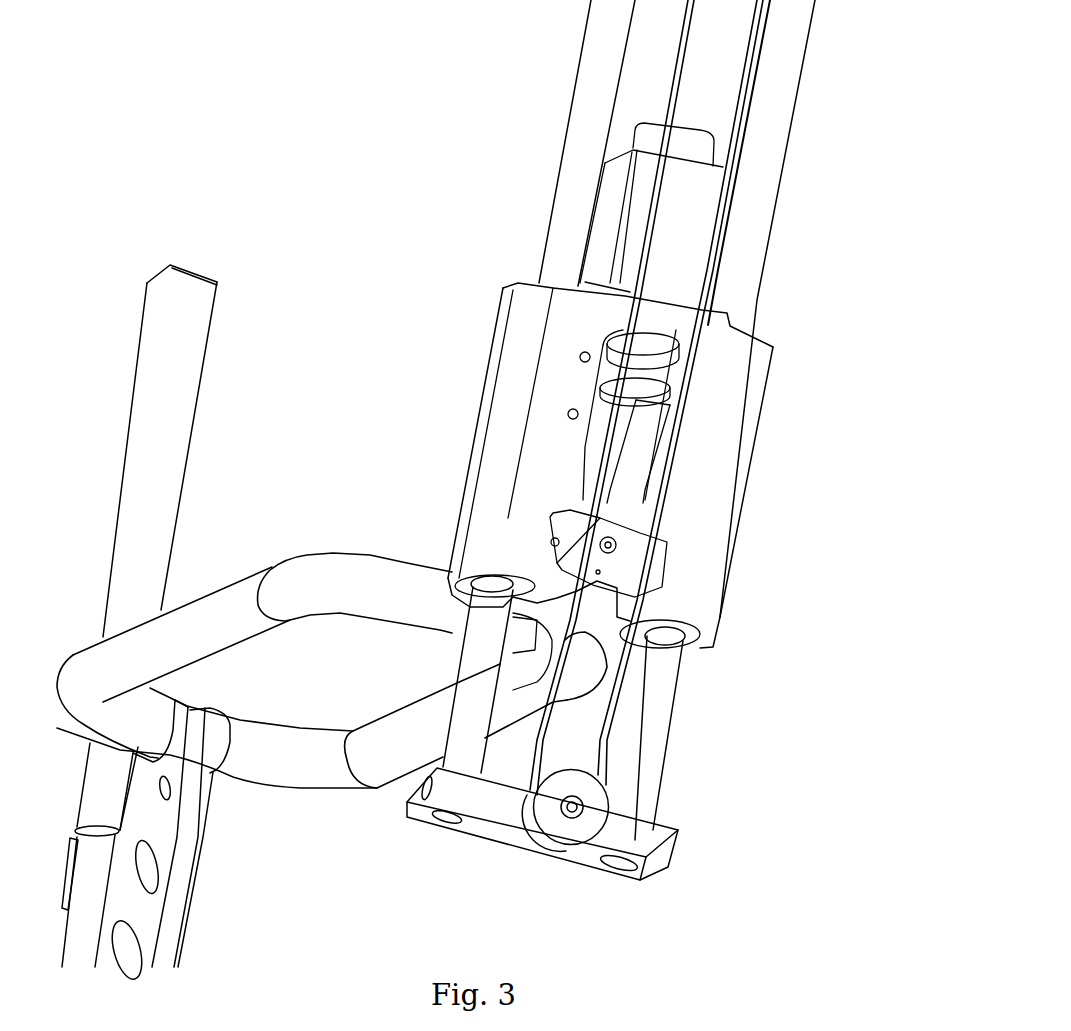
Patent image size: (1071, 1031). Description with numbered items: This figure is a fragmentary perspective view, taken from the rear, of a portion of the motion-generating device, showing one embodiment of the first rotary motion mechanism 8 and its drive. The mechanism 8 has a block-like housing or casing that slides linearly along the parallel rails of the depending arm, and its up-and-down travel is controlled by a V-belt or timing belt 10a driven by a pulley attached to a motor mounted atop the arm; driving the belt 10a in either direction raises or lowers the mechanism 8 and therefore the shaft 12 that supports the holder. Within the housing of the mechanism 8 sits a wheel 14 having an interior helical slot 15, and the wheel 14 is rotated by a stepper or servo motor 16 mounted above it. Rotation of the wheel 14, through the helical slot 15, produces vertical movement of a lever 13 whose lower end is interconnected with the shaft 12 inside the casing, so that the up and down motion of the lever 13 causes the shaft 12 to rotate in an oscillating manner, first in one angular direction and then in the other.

The first rotary motion mechanism 8 is at (474, 364).
The timing belt 10a is at (718, 252).
The shaft 12 is at (625, 545).
The lever 13 is at (632, 462).
The wheel 14 is at (660, 370).
The helical slot 15 is at (645, 390).
The stepper or servo motor 16 is at (690, 198).